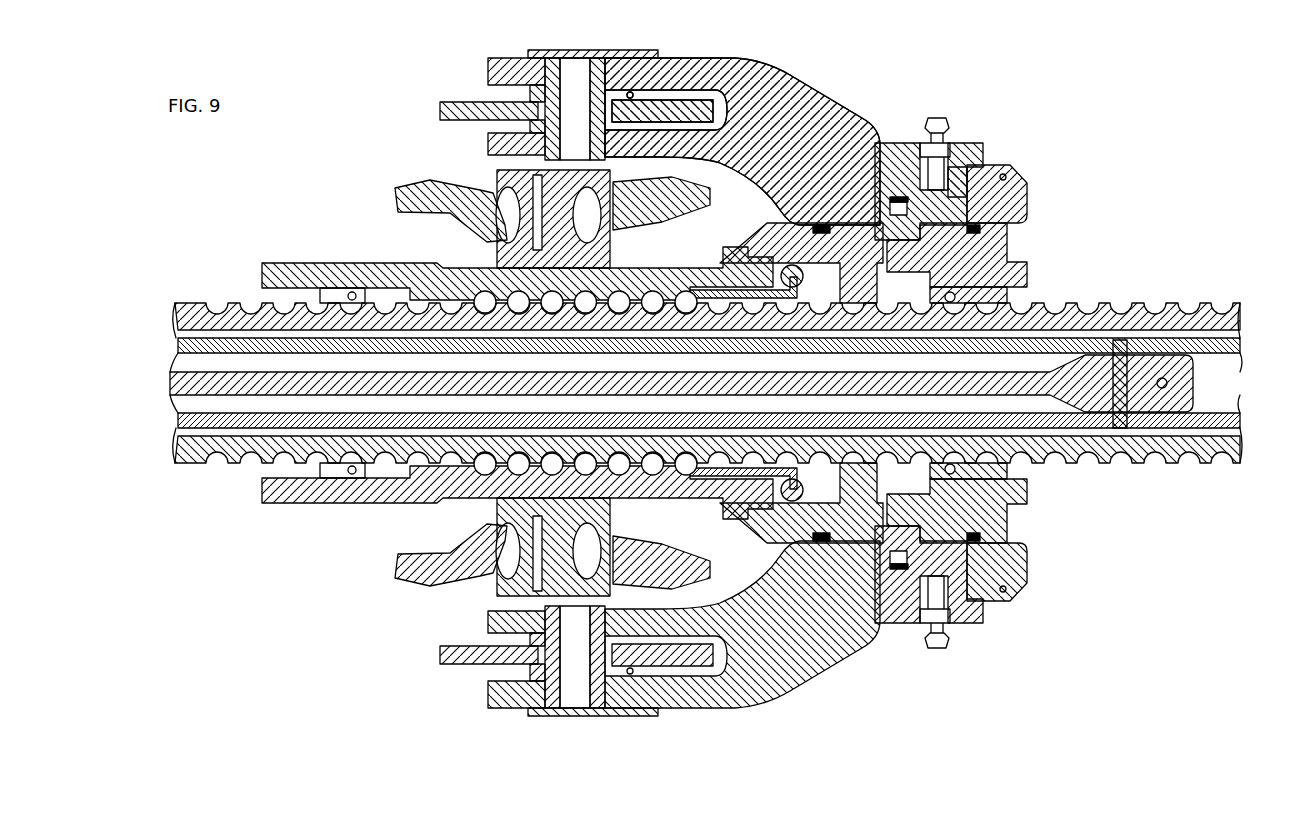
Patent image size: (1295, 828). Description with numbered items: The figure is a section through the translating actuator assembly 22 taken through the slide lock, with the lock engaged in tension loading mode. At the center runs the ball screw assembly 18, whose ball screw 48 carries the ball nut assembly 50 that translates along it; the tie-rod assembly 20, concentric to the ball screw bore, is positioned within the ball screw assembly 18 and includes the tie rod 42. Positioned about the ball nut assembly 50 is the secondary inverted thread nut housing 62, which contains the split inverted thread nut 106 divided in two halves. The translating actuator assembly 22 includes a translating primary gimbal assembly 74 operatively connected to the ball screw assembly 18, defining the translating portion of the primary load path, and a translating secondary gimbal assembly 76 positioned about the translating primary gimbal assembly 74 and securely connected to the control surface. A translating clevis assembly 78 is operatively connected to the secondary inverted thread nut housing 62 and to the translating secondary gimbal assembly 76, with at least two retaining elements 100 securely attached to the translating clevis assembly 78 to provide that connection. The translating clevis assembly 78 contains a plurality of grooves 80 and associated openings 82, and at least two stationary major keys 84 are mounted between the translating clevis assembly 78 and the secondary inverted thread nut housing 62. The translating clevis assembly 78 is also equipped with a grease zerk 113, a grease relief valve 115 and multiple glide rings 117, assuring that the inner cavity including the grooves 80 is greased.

The ball screw assembly 18 is at (358, 513).
The tie-rod assembly 20 is at (1243, 333).
The translating actuator assembly 22 is at (742, 42).
The tie rod 42 is at (1090, 352).
The ball screw 48 is at (197, 303).
The ball nut assembly 50 is at (270, 506).
The secondary inverted thread nut housing 62 is at (1007, 243).
The translating primary gimbal assembly 74 is at (400, 186).
The translating secondary gimbal assembly 76 is at (445, 100).
The translating clevis assembly 78 is at (805, 84).
The grooves 80 is at (985, 200).
The openings 82 is at (955, 165).
The stationary major keys 84 is at (876, 143).
The retaining elements 100 is at (547, 50).
The split inverted thread nut 106 is at (867, 487).
The grease zerk 113 is at (935, 118).
The grease relief valve 115 is at (935, 636).
The glide rings 117 is at (982, 229).